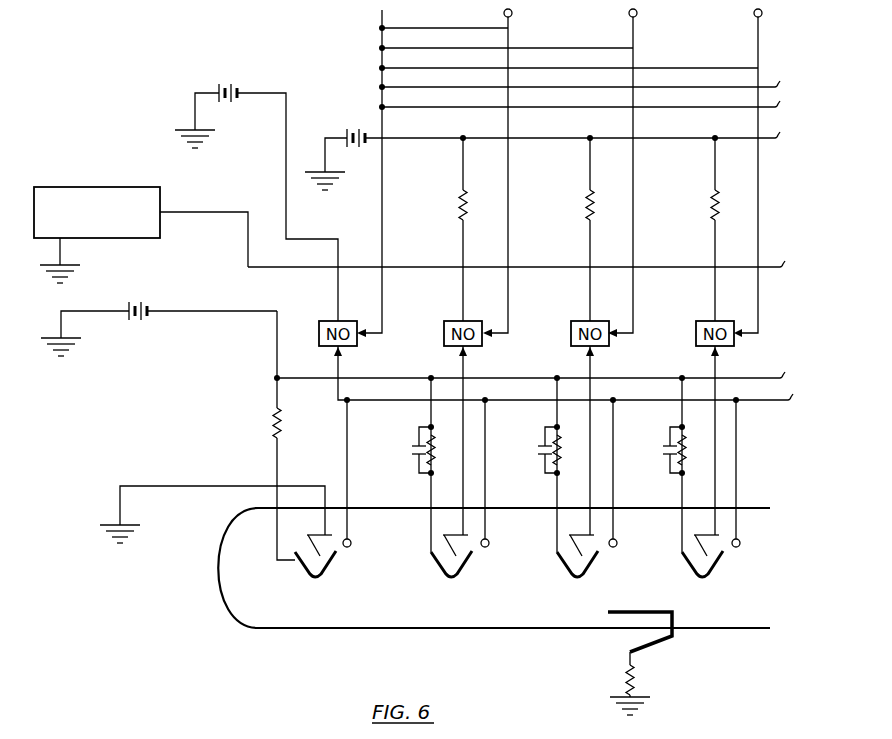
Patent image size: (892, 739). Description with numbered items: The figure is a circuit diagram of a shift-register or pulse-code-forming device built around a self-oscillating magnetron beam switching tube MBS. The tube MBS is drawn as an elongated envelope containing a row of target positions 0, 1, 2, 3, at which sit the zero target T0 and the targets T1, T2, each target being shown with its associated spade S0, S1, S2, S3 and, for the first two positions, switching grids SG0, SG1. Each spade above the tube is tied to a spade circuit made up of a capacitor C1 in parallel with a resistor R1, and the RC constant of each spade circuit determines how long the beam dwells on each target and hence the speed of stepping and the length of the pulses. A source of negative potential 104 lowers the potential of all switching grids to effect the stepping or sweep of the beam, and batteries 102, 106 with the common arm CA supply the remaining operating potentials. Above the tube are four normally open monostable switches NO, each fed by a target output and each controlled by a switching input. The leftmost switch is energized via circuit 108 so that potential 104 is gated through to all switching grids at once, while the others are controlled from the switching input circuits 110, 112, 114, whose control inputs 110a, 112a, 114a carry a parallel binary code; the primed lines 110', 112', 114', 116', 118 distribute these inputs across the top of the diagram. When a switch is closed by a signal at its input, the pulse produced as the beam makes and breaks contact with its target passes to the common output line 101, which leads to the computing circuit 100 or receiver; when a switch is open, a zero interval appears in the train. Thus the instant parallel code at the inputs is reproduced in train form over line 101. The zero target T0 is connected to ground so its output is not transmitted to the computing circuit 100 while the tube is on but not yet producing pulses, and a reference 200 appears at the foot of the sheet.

The computing circuit 100 is at (86, 187).
The common output line 101 is at (538, 268).
The battery 102 is at (156, 307).
The source of negative potential 104 is at (236, 82).
The battery 106 is at (345, 130).
The switching input circuit 108 is at (382, 229).
The switching input circuit 110 is at (519, 177).
The line 110' is at (426, 21).
The control input 110a is at (512, 16).
The switching input circuit 112 is at (645, 177).
The line 112' is at (489, 42).
The control input 112a is at (637, 16).
The switching input circuit 114 is at (771, 177).
The line 114' is at (551, 62).
The control input 114a is at (762, 16).
The line 116' is at (562, 82).
The line 118 is at (381, 107).
The reference 200 is at (466, 731).
The switch position 0 is at (316, 607).
The switch position 1 is at (454, 607).
The switch position 2 is at (580, 607).
The switch position 3 is at (704, 607).
The zero target T0 is at (318, 532).
The target T1 is at (462, 532).
The target T2 is at (590, 532).
The switch S0 is at (318, 578).
The switch S1 is at (456, 578).
The switch S2 is at (588, 578).
The switch S3 is at (712, 578).
The switch gate SG0 is at (351, 546).
The switch gate SG1 is at (489, 546).
The capacitor C1 is at (417, 449).
The resistor R1 is at (435, 450).
The magnetron beam switching tube MBS is at (297, 630).
The common arm CA is at (651, 653).